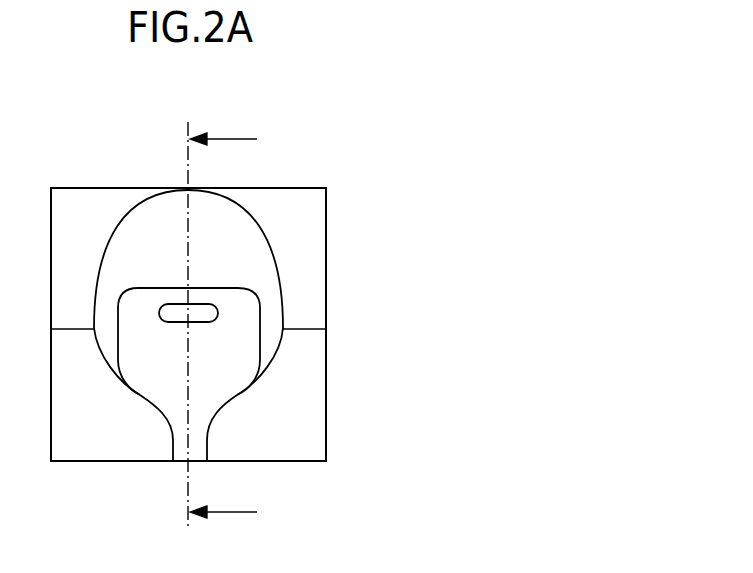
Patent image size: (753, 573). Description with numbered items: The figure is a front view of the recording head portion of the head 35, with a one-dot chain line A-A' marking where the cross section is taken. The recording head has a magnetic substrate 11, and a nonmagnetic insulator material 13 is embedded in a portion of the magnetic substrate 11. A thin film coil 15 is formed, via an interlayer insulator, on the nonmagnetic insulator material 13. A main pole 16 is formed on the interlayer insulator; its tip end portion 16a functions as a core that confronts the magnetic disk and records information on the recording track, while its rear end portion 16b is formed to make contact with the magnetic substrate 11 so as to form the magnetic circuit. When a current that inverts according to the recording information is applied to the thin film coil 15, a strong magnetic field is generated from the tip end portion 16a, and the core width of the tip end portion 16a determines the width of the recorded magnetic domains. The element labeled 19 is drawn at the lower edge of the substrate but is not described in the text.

The head 35 is at (336, 101).
The magnetic substrate 11 is at (302, 187).
The nonmagnetic insulator material 13 is at (307, 358).
The thin film coil 15 is at (260, 232).
The main pole 16 is at (258, 313).
The tip end portion 16a is at (197, 447).
The rear end portion 16b is at (202, 310).
The bottom edge 19 is at (307, 462).